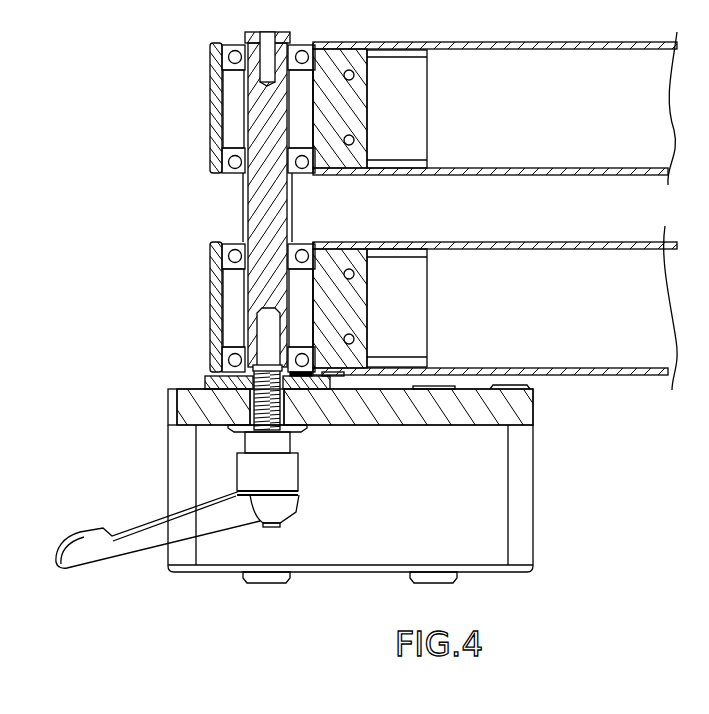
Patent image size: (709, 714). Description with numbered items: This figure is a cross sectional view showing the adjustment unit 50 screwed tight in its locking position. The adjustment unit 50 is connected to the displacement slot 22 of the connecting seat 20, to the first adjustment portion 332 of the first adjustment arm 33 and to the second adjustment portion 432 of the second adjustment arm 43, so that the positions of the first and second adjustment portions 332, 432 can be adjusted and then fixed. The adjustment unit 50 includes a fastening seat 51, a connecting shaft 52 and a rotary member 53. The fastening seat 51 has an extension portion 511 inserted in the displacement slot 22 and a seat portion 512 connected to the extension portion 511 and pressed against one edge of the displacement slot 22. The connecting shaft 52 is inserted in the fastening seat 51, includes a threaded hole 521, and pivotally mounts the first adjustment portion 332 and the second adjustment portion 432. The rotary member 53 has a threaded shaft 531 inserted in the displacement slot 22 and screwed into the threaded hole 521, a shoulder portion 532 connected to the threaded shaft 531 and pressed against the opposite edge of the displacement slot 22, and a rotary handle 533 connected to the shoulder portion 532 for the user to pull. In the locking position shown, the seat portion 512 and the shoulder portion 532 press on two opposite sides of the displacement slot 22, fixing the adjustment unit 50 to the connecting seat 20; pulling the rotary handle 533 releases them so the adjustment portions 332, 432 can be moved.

The connecting seat 20 is at (428, 427).
The displacement slot 22 is at (297, 412).
The first adjustment arm 33 is at (558, 242).
The first adjustment portion 332 is at (318, 243).
The second adjustment arm 43 is at (558, 42).
The second adjustment portion 432 is at (318, 43).
The adjustment unit 50 is at (199, 474).
The fastening seat 51 is at (223, 377).
The extension portion 511 is at (256, 400).
The seat portion 512 is at (218, 383).
The connecting shaft 52 is at (258, 217).
The threaded hole 521 is at (282, 362).
The rotary member 53 is at (199, 474).
The threaded shaft 531 is at (266, 371).
The shoulder portion 532 is at (280, 438).
The rotary handle 533 is at (148, 545).